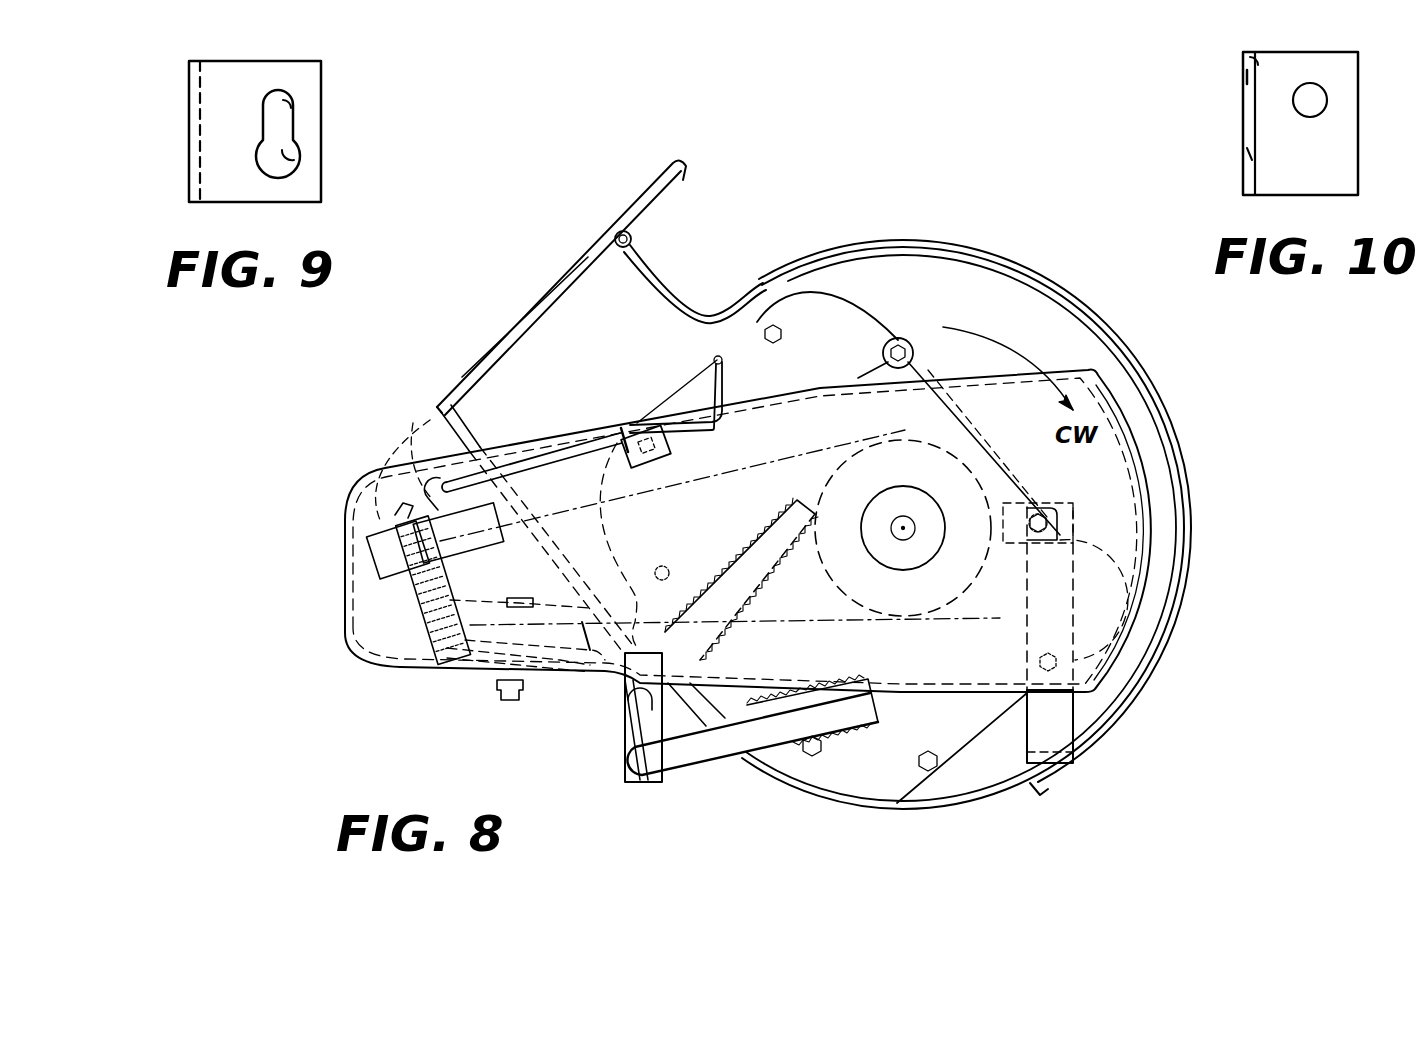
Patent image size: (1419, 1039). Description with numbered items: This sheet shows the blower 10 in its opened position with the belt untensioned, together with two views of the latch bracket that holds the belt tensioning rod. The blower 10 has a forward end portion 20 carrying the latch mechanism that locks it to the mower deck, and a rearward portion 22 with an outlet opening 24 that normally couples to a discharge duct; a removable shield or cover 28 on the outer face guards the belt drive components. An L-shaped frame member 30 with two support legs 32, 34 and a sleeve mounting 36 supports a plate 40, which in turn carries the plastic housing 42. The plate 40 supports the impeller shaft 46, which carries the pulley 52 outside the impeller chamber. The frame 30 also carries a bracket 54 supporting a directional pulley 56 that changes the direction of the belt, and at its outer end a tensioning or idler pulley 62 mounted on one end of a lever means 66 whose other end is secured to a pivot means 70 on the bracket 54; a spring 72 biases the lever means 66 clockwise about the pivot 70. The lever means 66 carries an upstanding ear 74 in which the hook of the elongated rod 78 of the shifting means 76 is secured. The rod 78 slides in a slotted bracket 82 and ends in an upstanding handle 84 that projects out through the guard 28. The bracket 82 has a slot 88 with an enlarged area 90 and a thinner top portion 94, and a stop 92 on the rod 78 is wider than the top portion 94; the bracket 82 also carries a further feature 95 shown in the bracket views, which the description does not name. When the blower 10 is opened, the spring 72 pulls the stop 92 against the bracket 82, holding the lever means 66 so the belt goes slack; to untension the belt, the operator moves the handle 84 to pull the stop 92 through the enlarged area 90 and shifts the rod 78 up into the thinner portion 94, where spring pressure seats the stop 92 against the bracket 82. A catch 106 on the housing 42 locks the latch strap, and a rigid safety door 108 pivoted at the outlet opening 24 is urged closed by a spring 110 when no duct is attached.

In FIG. 8, the blower 10 is at (1050, 240).
In FIG. 8, the forward end portion 20 is at (1172, 652).
In FIG. 8, the rearward portion 22 is at (335, 470).
In FIG. 8, the outlet opening 24 is at (574, 364).
In FIG. 8, the removable shield or cover 28 is at (370, 665).
In FIG. 8, the L-shaped frame member 30 is at (618, 748).
In FIG. 8, the support leg 32 is at (640, 703).
In FIG. 8, the support leg 34 is at (690, 760).
In FIG. 8, the sleeve mounting 36 is at (665, 660).
In FIG. 8, the plate 40 is at (880, 795).
In FIG. 8, the plastic housing 42 is at (912, 240).
In FIG. 8, the impeller shaft 46 is at (903, 527).
In FIG. 8, the pulley 52 is at (950, 615).
In FIG. 8, the bracket 54 is at (480, 680).
In FIG. 8, the directional pulley 56 is at (568, 610).
In FIG. 8, the tensioning or idler pulley 62 is at (370, 553).
In FIG. 8, the lever means 66 is at (372, 520).
In FIG. 8, the pivot means 70 is at (395, 500).
In FIG. 8, the spring 72 is at (440, 612).
In FIG. 8, the upstanding ear 74 is at (430, 480).
In FIG. 8, the shifting means 76 is at (683, 397).
In FIG. 8, the elongated rod 78 is at (548, 460).
In FIG. 9, the slotted bracket 82 is at (178, 72).
In FIG. 10, the slotted bracket 82 is at (1368, 40).
In FIG. 8, the slotted bracket 82 is at (650, 428).
In FIG. 8, the upstanding handle 84 is at (727, 378).
In FIG. 9, the slot 88 is at (305, 122).
In FIG. 10, the slot 88 is at (1310, 100).
In FIG. 9, the enlarged area 90 is at (290, 158).
In FIG. 10, the enlarged area 90 is at (1248, 152).
In FIG. 8, the stop 92 is at (648, 462).
In FIG. 9, the top portion of the slot 94 is at (295, 105).
In FIG. 10, the top portion of the slot 94 is at (1248, 85).
In FIG. 9, the tab 95 is at (255, 110).
In FIG. 10, the tab 95 is at (1258, 60).
In FIG. 8, the tab 95 is at (622, 432).
In FIG. 8, the catch 106 is at (1070, 755).
In FIG. 8, the safety door or flap 108 is at (500, 345).
In FIG. 8, the spring 110 is at (633, 239).